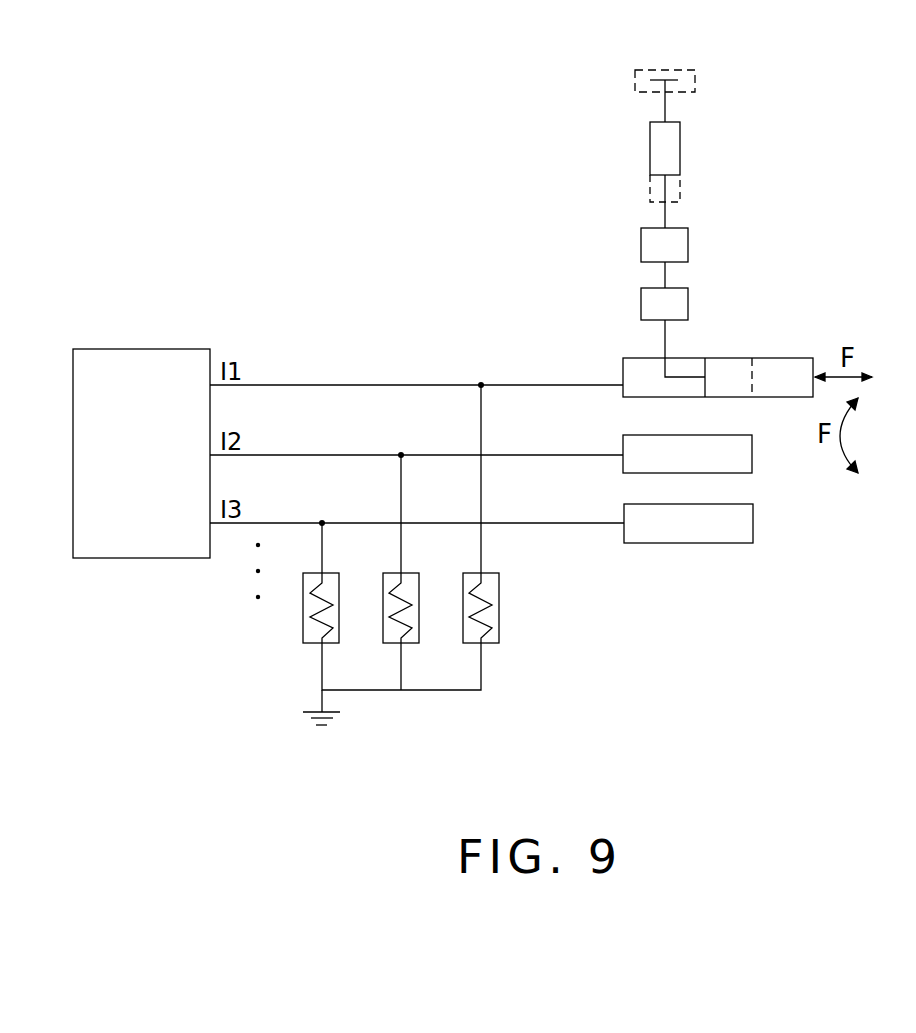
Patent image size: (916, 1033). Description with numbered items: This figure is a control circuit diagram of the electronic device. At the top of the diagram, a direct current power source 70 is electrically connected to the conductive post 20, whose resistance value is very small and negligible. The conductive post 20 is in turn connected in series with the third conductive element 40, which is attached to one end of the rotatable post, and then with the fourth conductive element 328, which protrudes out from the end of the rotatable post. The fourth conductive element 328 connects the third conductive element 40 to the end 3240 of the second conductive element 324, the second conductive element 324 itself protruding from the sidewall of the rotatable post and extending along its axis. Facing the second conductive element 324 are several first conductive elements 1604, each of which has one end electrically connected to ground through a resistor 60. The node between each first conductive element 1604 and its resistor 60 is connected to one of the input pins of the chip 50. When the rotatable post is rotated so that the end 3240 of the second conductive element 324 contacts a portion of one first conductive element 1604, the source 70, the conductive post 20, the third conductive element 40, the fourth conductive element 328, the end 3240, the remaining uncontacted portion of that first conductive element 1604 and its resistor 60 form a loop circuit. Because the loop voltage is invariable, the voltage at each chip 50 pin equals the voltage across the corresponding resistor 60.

The chip 50 is at (157, 348).
The resistor 60 is at (499, 617).
The direct current power source 70 is at (697, 80).
The conductive post 20 is at (680, 147).
The third conductive element 40 is at (688, 247).
The fourth conductive element 328 is at (688, 300).
The second conductive element 324 is at (780, 372).
The end of the second conductive element 3240 is at (705, 383).
The first conductive element 1604 is at (710, 543).